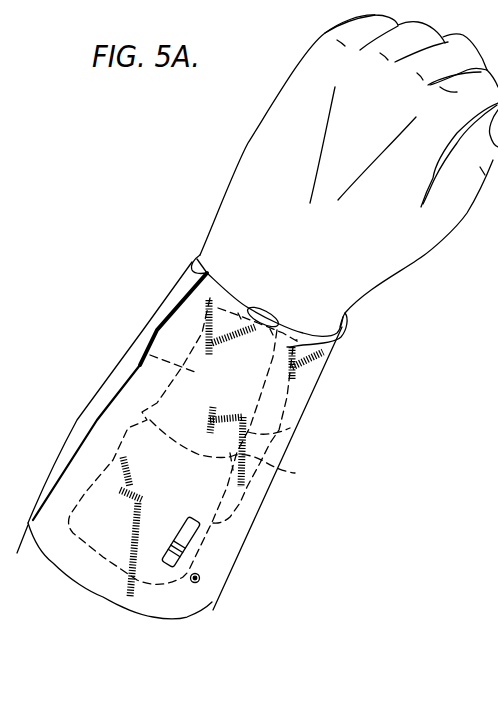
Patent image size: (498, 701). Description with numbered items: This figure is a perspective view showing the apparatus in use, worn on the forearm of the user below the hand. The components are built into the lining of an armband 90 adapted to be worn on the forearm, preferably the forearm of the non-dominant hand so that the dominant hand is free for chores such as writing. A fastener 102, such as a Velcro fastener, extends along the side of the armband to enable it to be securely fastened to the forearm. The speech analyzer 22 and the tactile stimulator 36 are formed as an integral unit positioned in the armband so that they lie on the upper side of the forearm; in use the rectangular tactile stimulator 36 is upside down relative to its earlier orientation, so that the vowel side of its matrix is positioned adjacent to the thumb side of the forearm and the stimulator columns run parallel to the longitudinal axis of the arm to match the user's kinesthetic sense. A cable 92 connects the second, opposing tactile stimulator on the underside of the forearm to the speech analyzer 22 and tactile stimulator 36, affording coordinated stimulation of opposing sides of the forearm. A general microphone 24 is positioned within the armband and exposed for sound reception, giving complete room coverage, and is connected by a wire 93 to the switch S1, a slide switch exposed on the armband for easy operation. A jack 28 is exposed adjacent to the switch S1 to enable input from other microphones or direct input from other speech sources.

The fastener 102 is at (180, 291).
The tactile stimulator 36 is at (143, 337).
The speech analyzer 22 is at (110, 462).
The general microphone 24 is at (265, 325).
The armband 90 is at (326, 367).
The wire 93 is at (303, 403).
The cable 92 is at (296, 473).
The switch S1 is at (197, 543).
The jack 28 is at (199, 583).